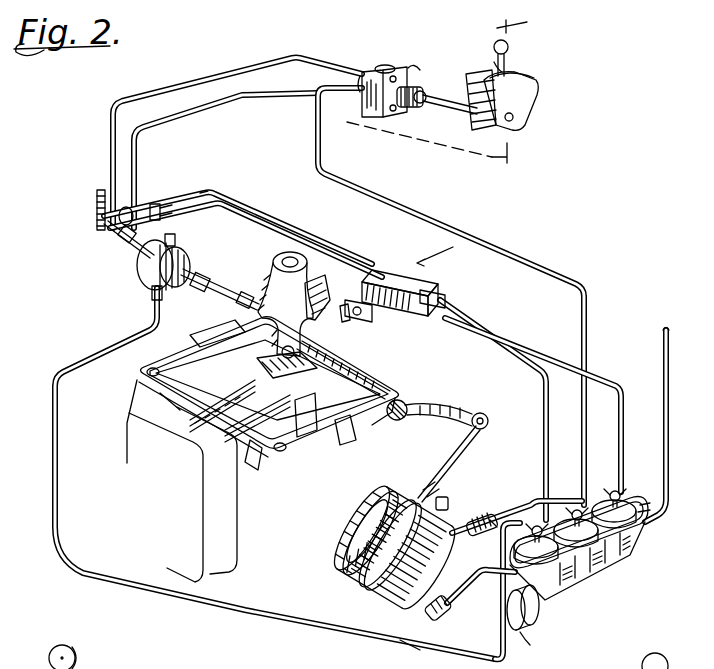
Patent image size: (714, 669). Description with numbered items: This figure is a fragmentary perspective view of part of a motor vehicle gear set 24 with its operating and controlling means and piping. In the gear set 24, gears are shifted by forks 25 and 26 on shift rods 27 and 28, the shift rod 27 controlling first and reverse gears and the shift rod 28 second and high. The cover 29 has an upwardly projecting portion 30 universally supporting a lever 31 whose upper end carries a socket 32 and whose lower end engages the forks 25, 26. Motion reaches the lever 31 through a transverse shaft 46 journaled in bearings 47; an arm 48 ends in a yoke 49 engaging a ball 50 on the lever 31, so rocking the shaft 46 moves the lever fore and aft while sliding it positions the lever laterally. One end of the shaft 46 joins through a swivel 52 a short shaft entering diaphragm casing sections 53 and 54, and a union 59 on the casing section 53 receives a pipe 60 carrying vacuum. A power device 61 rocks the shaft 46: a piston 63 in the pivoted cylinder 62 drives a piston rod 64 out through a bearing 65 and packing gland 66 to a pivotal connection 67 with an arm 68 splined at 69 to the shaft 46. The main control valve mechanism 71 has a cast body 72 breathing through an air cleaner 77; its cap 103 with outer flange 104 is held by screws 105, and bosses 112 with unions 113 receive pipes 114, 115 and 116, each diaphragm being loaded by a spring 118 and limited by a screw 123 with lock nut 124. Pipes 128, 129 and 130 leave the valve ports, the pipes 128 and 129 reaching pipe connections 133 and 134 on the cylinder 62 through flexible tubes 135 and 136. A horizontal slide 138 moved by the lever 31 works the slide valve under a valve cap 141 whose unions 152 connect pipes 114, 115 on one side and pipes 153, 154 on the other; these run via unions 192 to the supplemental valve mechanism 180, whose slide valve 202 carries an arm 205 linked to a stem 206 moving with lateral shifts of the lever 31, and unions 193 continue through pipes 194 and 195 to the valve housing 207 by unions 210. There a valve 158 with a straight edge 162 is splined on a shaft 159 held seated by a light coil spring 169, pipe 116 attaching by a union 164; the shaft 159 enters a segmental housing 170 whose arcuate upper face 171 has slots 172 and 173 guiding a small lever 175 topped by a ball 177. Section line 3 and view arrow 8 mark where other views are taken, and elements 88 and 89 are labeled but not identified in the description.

The section line 3 is at (347, 122).
The direction arrow 8 is at (435, 255).
The gear set 24 is at (218, 576).
The fork 25 is at (330, 450).
The fork 26 is at (240, 377).
The shift rod 27 is at (265, 460).
The shift rod 28 is at (212, 395).
The cover 29 is at (390, 363).
The upwardly projecting portion 30 is at (268, 307).
The lever 31 is at (260, 263).
The socket 32 is at (284, 260).
The shaft 46 is at (348, 357).
The bearings 47 is at (352, 437).
The arm 48 is at (355, 314).
The yoke 49 is at (200, 330).
The ball 50 is at (262, 360).
The swivel 52 is at (188, 298).
The casing section 53 is at (180, 250).
The casing section 54 is at (150, 275).
The union 59 is at (152, 305).
The pipe 60 is at (120, 342).
The power device 61 is at (355, 535).
The cylinder 62 is at (382, 512).
The piston 63 is at (345, 562).
The piston rod 64 is at (452, 472).
The bearing 65 is at (446, 504).
The packing gland 66 is at (428, 490).
The pivotal connection 67 is at (486, 427).
The arm 68 is at (455, 405).
The splined connection 69 is at (403, 402).
The main control valve mechanism 71 is at (632, 548).
The body 72 is at (535, 605).
The air cleaner 77 is at (522, 640).
The valve manifold 88 is at (640, 528).
The supply conduit 89 is at (670, 433).
The cap 103 is at (622, 495).
The outer flange 104 is at (652, 505).
The screws 105 is at (652, 498).
The boss 112 is at (546, 517).
The union 113 is at (630, 485).
The pipe 114 is at (472, 344).
The pipe 115 is at (505, 322).
The pipe 116 is at (362, 176).
The spring 118 is at (541, 500).
The screw 123 is at (590, 500).
The lock nut 124 is at (598, 500).
The pipe 128 is at (462, 600).
The pipe 129 is at (535, 492).
The pipe 130 is at (499, 550).
The pipe connection 133 is at (412, 648).
The pipe connection 134 is at (472, 524).
The flexible tube 135 is at (445, 615).
The flexible tube 136 is at (494, 517).
The horizontal slide 138 is at (400, 320).
The valve cap 141 is at (446, 298).
The union 152 is at (381, 272).
The pipe 153 is at (338, 253).
The pipe 154 is at (380, 262).
The valve 158 is at (420, 70).
The shaft 159 is at (440, 108).
The straight edge 162 is at (415, 84).
The union 164 is at (358, 76).
The light coil spring 169 is at (418, 94).
The segmental housing 170 is at (495, 128).
The arcuate upper face 171 is at (494, 62).
The slot 172 is at (498, 50).
The slot 173 is at (530, 74).
The small lever 175 is at (515, 62).
The ball 177 is at (510, 45).
The supplemental valve mechanism 180 is at (168, 210).
The unions 192 is at (208, 195).
The unions 193 is at (110, 232).
The pipe 194 is at (295, 97).
The pipe 195 is at (297, 58).
The slide valve 202 is at (135, 205).
The arm 205 is at (100, 190).
The stem 206 is at (124, 244).
The valve housing 207 is at (388, 68).
The unions 210 is at (372, 68).